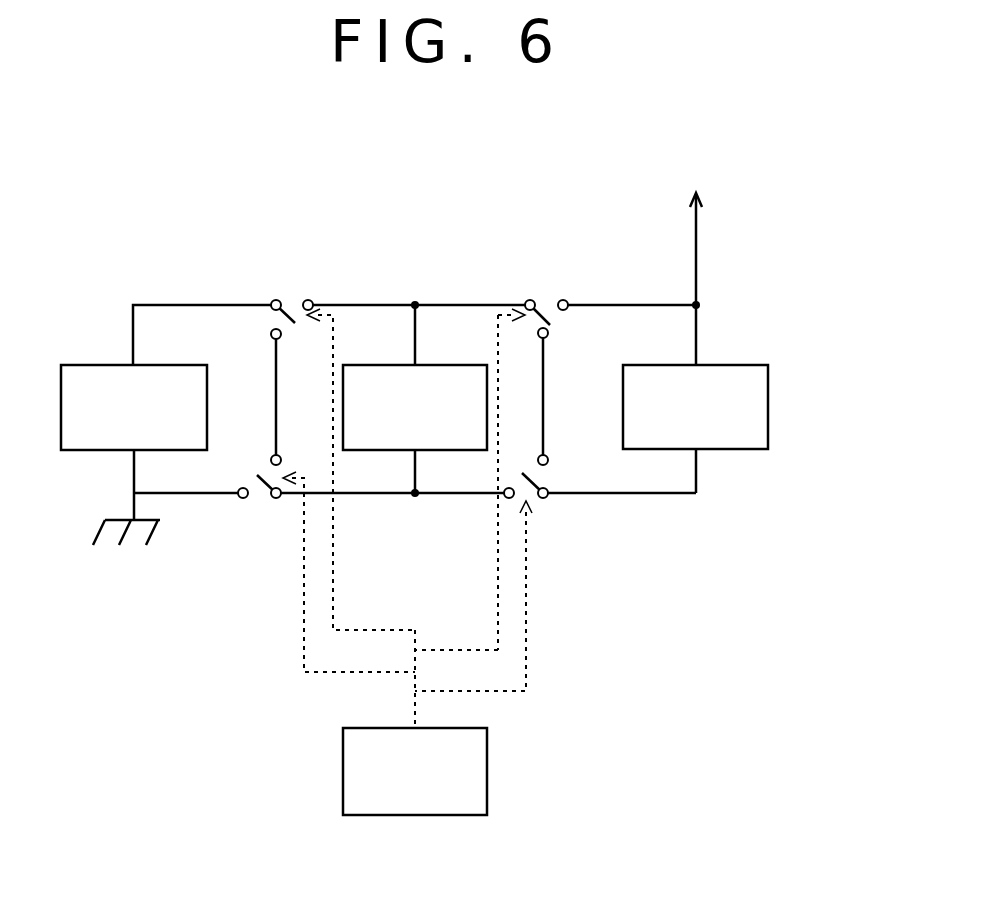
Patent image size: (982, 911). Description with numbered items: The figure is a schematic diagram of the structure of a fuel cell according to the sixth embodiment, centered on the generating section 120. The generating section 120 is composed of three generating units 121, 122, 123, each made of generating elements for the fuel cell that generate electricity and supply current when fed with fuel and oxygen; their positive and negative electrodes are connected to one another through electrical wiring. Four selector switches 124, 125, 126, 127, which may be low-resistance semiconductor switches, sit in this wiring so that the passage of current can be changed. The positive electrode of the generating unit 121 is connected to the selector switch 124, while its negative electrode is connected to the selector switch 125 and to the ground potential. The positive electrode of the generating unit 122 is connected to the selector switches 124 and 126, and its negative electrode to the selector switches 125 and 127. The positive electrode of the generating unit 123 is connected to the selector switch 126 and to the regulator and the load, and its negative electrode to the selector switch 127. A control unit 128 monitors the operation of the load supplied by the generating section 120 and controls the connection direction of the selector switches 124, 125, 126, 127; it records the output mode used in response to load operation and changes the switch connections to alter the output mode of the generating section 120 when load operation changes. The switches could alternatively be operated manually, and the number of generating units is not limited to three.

The generating section 120 is at (168, 625).
The generating unit 121 is at (80, 363).
The generating unit 122 is at (442, 441).
The generating unit 123 is at (745, 450).
The selector switch 124 is at (273, 298).
The selector switch 125 is at (276, 498).
The selector switch 126 is at (527, 298).
The selector switch 127 is at (543, 498).
The control unit 128 is at (465, 815).